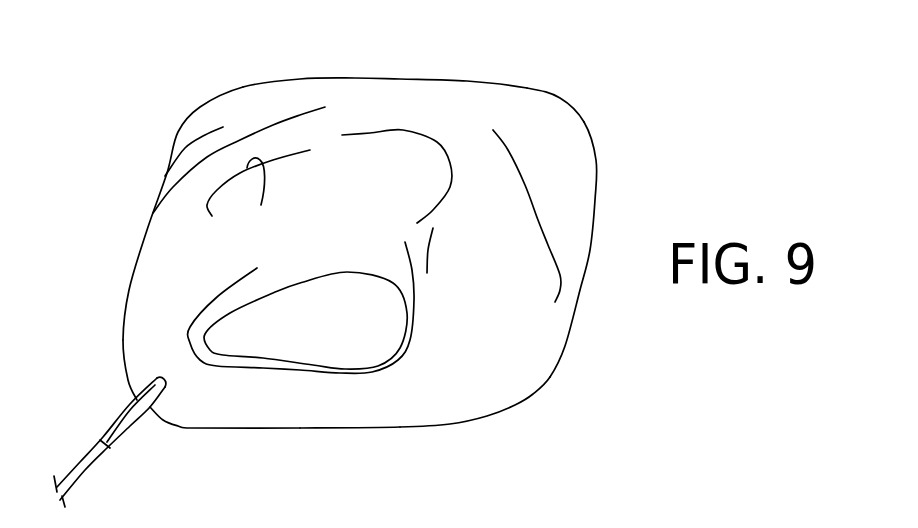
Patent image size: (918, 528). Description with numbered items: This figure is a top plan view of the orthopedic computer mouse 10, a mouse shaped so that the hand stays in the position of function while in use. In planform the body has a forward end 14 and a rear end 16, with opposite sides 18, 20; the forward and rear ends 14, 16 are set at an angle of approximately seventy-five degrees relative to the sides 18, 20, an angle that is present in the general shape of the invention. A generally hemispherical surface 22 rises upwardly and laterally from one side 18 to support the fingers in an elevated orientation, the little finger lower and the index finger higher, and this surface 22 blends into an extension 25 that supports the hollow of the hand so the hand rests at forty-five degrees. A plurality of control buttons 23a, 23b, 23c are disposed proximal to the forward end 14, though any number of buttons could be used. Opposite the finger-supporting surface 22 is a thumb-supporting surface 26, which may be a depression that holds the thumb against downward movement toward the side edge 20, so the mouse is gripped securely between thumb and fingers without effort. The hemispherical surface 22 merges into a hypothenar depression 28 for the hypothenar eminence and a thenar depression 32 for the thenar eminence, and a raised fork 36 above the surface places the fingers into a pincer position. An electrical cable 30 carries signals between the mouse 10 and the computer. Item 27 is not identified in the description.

The orthopedic computer mouse 10 is at (582, 302).
The forward end 14 is at (122, 353).
The rear end 16 is at (593, 192).
The side 18 is at (355, 78).
The side 20 is at (377, 428).
The generally hemispherical surface 22 is at (428, 148).
The control button 23a is at (192, 152).
The control button 23b is at (163, 217).
The control button 23c is at (138, 323).
The extension 25 is at (542, 268).
The thumb-supporting surface 26 is at (222, 400).
The opening rim 27 is at (233, 281).
The hypothenar depression 28 is at (547, 113).
The electrical cable 30 is at (84, 471).
The thenar depression 32 is at (520, 362).
The raised fork 36 is at (383, 342).